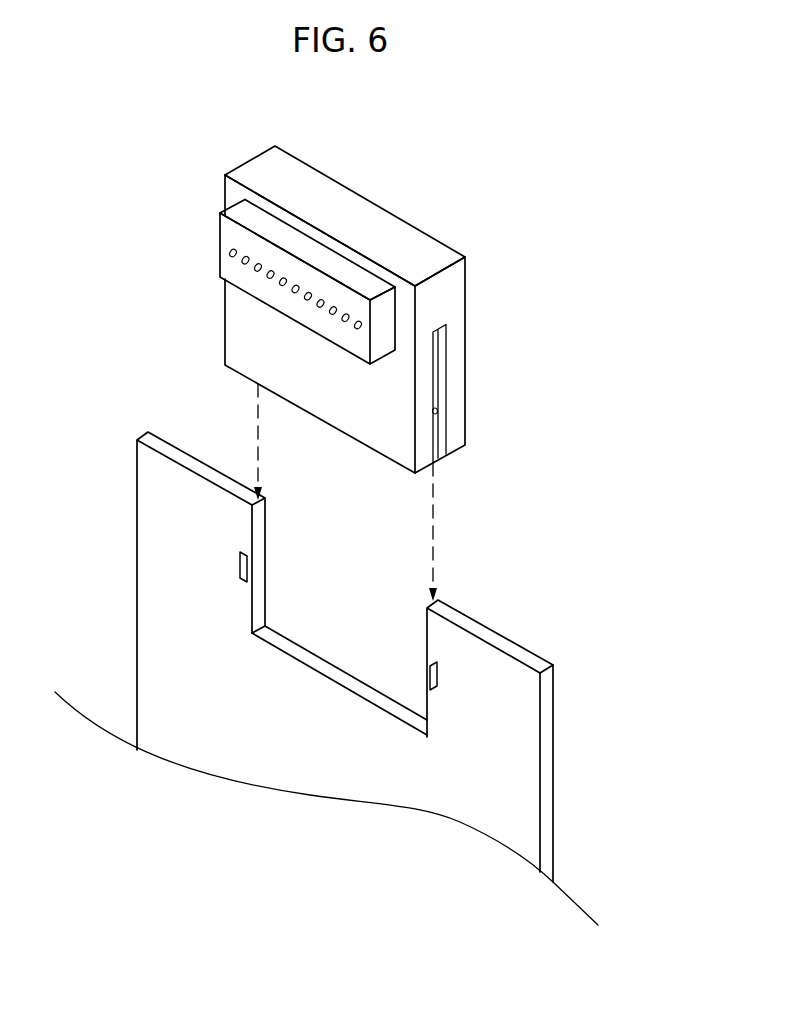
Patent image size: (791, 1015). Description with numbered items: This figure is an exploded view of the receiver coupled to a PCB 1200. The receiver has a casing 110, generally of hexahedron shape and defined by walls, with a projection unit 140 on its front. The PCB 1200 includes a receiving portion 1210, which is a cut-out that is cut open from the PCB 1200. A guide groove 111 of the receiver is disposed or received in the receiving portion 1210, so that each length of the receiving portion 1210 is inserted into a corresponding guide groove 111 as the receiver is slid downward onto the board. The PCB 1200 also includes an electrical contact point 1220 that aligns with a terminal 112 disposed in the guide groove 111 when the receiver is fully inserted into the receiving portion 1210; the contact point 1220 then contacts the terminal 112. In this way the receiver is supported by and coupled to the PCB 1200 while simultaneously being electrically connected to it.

The casing 110 is at (457, 304).
The guide groove 111 is at (441, 355).
The terminal 112 is at (437, 410).
The projection unit 140 is at (222, 245).
The PCB 1200 is at (545, 720).
The receiving portion 1210 is at (252, 527).
The electrical contact point 1220 is at (434, 662).